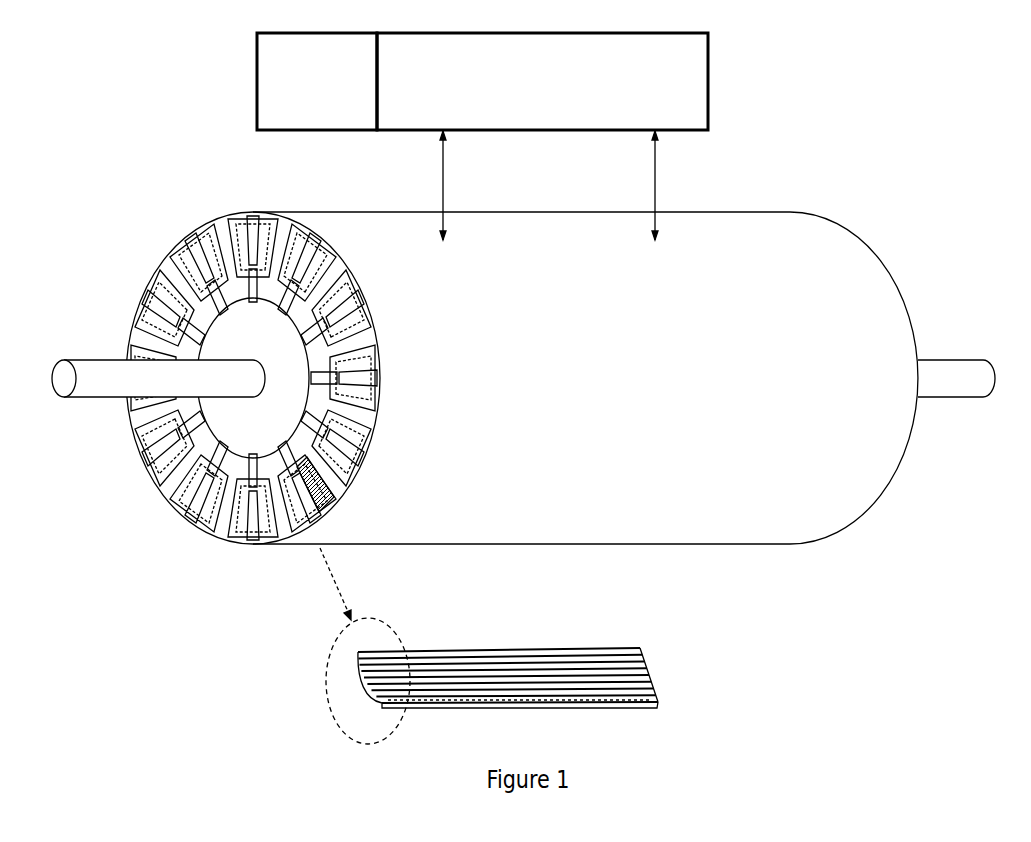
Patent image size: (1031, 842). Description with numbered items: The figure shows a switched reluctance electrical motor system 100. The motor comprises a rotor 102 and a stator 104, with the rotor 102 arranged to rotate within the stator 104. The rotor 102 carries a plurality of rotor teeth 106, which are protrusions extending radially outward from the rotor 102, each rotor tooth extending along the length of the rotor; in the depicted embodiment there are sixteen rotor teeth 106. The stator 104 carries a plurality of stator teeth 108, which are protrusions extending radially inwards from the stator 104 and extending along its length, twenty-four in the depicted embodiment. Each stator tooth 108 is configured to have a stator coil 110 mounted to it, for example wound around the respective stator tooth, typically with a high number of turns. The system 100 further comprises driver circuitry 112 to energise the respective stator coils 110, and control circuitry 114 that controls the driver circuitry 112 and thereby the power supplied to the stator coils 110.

The switched reluctance electrical motor system 100 is at (924, 66).
The rotor 102 is at (160, 300).
The stator 104 is at (575, 534).
The rotor teeth 106 is at (150, 450).
The stator teeth 108 is at (226, 505).
The stator coil 110 is at (470, 648).
The driver circuitry 112 is at (551, 122).
The control circuitry 114 is at (330, 122).